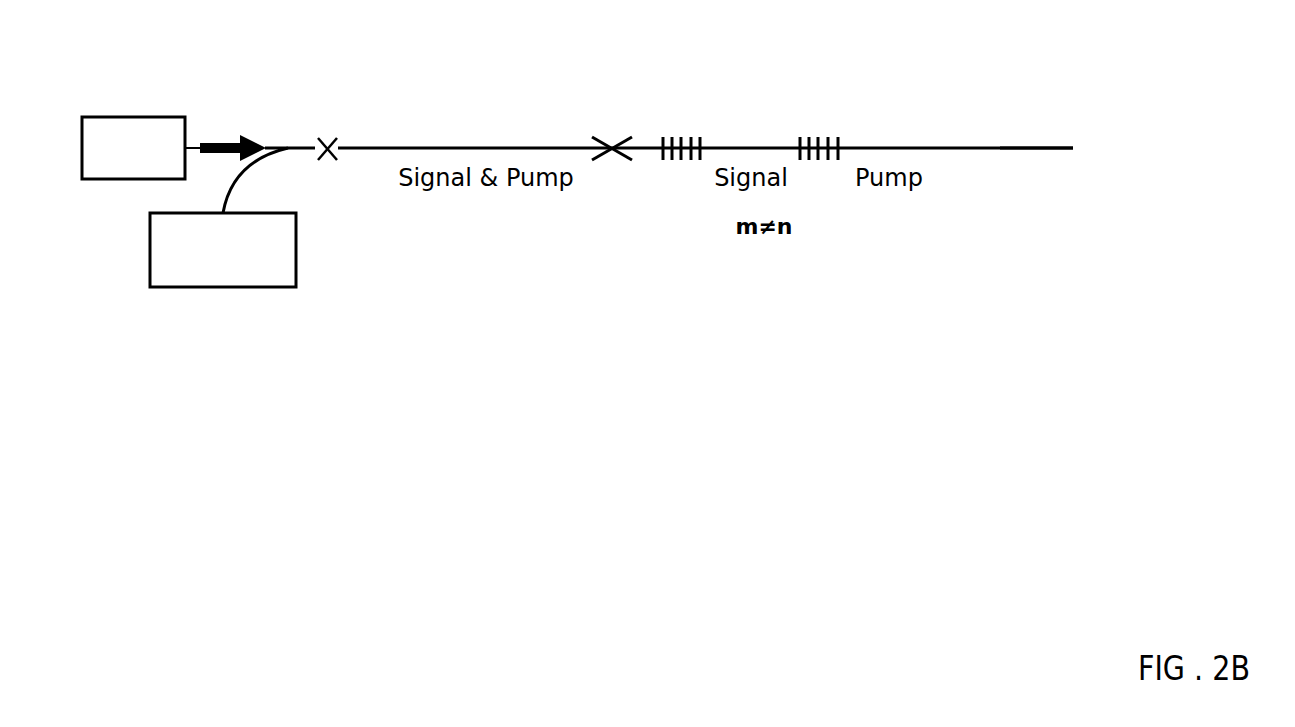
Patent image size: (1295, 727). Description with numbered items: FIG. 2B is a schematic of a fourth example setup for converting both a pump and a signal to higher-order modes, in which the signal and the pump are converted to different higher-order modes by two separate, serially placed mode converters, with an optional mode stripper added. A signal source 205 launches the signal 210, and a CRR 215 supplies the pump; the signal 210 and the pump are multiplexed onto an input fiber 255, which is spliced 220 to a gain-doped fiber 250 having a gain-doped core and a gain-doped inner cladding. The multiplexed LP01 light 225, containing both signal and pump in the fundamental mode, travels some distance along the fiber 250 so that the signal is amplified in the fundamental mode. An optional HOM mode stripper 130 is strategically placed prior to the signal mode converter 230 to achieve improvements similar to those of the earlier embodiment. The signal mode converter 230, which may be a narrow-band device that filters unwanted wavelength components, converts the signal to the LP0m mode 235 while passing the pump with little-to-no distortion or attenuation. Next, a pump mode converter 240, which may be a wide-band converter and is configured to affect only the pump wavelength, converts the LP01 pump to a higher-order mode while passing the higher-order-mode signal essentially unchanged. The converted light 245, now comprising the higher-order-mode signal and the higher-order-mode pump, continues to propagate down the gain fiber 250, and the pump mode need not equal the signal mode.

The signal source 205 is at (105, 117).
The signal 210 is at (214, 142).
The CRR 215 is at (227, 287).
The splice 220 is at (324, 136).
The multiplexed LP01 light 225 is at (519, 104).
The HOM mode stripper 130 is at (608, 136).
The signal mode converter 230 is at (677, 160).
The LP0m mode 235 is at (769, 104).
The pump mode converter 240 is at (815, 160).
The converted light 245 is at (919, 104).
The gain-doped fiber 250 is at (1048, 150).
The input fiber 255 is at (280, 150).